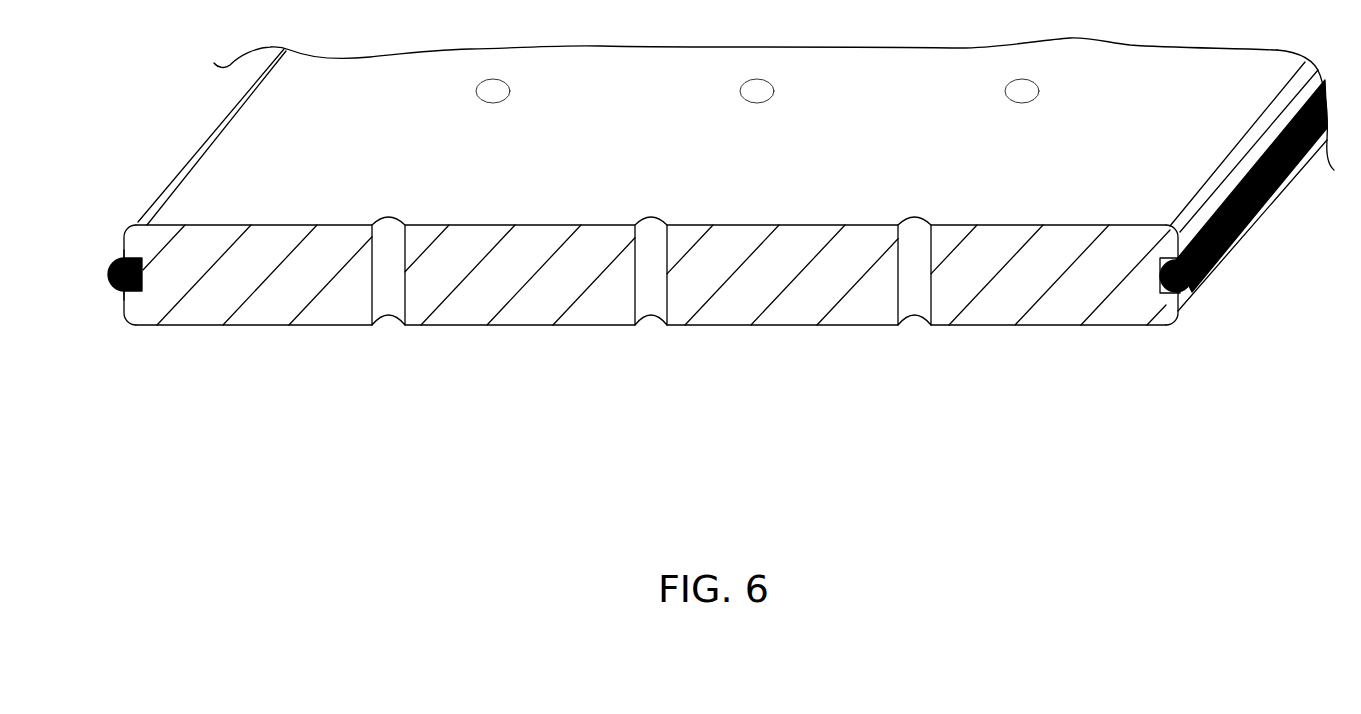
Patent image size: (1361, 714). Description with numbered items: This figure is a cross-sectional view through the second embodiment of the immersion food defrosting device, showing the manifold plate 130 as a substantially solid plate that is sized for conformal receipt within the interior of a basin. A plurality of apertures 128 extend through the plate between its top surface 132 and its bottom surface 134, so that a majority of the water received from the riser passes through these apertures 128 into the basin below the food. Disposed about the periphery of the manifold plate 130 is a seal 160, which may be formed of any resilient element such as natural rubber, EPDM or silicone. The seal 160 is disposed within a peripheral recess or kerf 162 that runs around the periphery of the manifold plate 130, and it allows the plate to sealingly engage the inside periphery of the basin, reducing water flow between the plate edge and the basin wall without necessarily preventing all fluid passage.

The apertures 128 is at (390, 217).
The manifold plate 130 is at (981, 378).
The top surface 132 is at (755, 210).
The bottom surface 134 is at (733, 338).
The seal 160 is at (118, 262).
The peripheral recess or kerf 162 is at (137, 290).